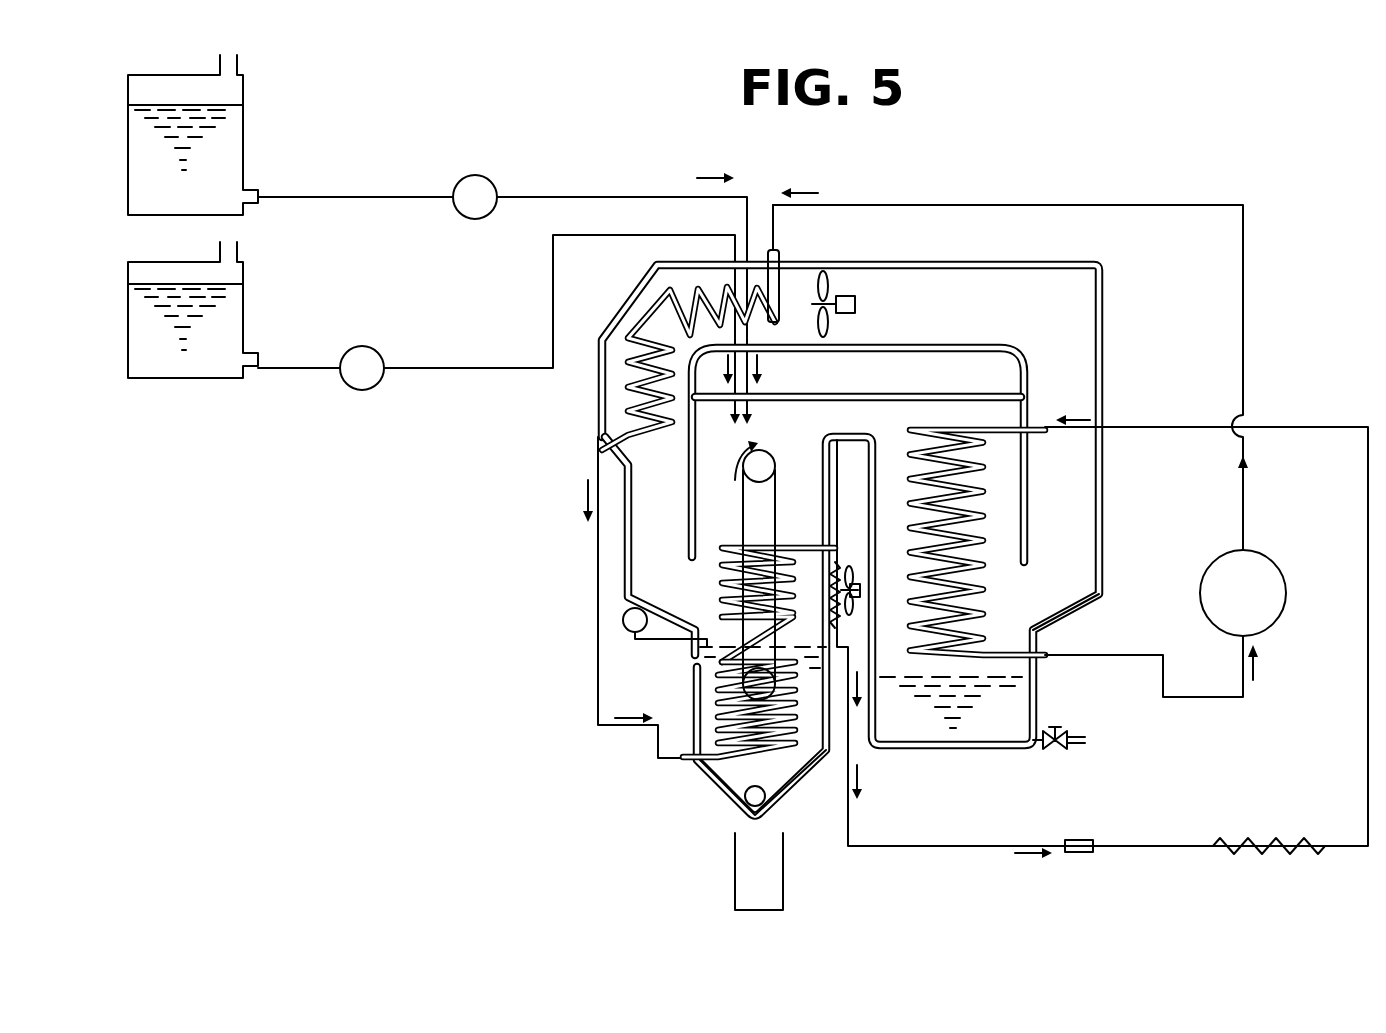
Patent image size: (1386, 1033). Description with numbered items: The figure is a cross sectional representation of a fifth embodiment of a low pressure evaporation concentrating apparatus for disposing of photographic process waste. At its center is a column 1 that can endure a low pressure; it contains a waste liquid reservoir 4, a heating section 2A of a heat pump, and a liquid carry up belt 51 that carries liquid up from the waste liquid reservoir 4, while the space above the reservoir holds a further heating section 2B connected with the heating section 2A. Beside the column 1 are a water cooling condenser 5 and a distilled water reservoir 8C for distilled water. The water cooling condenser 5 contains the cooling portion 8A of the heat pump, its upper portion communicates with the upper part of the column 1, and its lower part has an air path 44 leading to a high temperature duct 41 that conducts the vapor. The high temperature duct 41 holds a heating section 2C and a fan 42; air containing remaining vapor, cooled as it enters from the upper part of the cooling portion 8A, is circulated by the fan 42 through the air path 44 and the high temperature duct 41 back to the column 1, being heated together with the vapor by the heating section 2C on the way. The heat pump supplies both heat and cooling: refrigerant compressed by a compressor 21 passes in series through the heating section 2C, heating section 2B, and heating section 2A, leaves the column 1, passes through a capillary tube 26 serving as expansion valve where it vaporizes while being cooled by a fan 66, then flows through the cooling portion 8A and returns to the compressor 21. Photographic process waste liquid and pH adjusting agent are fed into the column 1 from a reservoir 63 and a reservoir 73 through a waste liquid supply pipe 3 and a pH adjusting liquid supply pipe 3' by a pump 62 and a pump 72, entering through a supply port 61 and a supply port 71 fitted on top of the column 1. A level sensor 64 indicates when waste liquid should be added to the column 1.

The column 1 is at (792, 786).
The heating section 2A is at (800, 715).
The heating section 2B is at (720, 563).
The heating section 2C is at (647, 308).
The waste liquid supply pipe 3 is at (505, 263).
The pH adjusting liquid supply pipe 3' is at (499, 352).
The waste liquid reservoir 4 is at (732, 775).
The water cooling condenser 5 is at (1005, 550).
The cooling portion 8A is at (985, 490).
The distilled water reservoir 8C is at (1005, 712).
The compressor 21 is at (1282, 576).
The capillary tube 26 is at (1240, 850).
The high temperature duct 41 is at (905, 292).
The fan 42 is at (826, 290).
The air path 44 is at (1078, 555).
The liquid carry up belt 51 is at (774, 570).
The supply port 61 is at (745, 400).
The pump 62 is at (474, 220).
The reservoir 63 is at (127, 184).
The level sensor 64 is at (622, 628).
The fan 66 is at (857, 606).
The supply port 71 is at (742, 393).
The pump 72 is at (360, 391).
The reservoir 73 is at (175, 380).